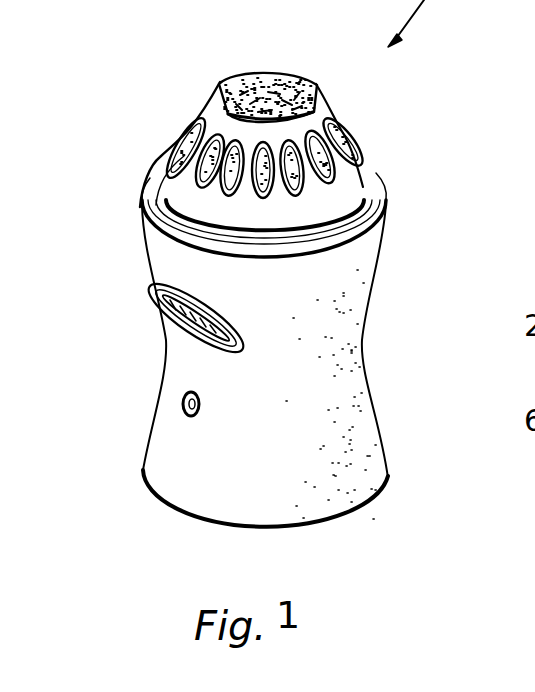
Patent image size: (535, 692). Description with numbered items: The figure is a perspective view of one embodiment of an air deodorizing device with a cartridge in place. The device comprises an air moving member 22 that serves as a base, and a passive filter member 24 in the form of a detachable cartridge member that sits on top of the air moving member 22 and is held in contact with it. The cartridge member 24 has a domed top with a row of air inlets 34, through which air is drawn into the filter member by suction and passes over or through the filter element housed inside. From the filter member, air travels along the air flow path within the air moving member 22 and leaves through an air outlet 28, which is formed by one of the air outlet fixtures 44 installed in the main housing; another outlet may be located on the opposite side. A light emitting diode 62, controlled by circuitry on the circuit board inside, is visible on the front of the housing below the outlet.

The air moving member 22 is at (338, 293).
The filter member 24 is at (212, 110).
The air inlets 34 is at (362, 148).
The air outlet fixtures 44 is at (152, 286).
The air outlet 28 is at (158, 330).
The light emitting diode 62 is at (181, 406).